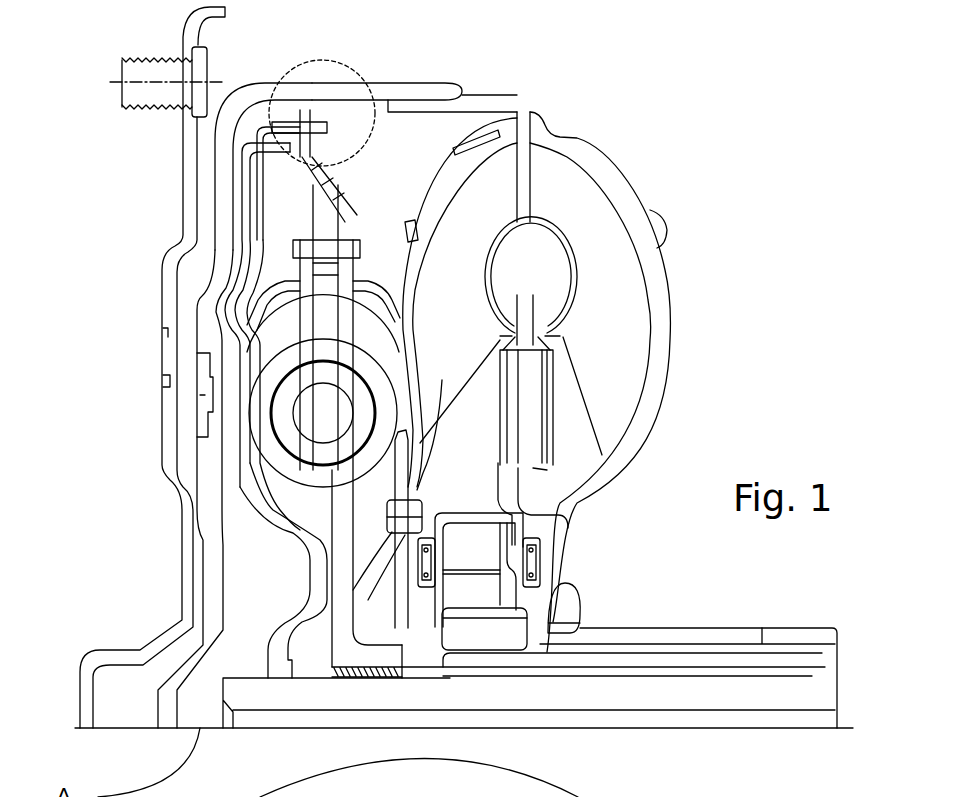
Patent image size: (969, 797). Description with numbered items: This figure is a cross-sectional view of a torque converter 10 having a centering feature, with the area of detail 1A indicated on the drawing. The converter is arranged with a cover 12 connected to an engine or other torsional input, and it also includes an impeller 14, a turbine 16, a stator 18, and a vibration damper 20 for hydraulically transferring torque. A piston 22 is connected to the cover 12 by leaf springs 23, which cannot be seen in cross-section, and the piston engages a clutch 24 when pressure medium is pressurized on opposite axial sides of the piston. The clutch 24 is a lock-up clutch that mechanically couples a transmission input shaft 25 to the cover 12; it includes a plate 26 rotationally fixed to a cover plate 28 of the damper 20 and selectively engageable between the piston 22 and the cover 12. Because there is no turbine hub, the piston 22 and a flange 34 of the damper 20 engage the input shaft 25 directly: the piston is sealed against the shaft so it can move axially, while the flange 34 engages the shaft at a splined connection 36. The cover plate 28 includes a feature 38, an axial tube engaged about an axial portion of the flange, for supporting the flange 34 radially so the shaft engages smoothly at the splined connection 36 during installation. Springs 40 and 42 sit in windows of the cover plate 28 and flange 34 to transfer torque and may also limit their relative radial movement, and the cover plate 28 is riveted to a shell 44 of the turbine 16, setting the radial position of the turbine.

The detail region 1A is at (310, 62).
The torque converter 10 is at (703, 118).
The cover 12 is at (257, 93).
The impeller 14 is at (583, 203).
The turbine 16 is at (493, 180).
The stator 18 is at (530, 413).
The vibration damper 20 is at (388, 198).
The piston 22 is at (282, 523).
The leaf springs 23 is at (203, 428).
The clutch 24 is at (227, 198).
The transmission input shaft 25 is at (675, 688).
The plate 26 is at (228, 147).
The cover plate 28 is at (340, 187).
The flange 34 is at (340, 590).
The splined connection 36 is at (397, 690).
The feature 38 is at (420, 612).
The spring 40 is at (255, 362).
The spring 42 is at (200, 437).
The shell 44 is at (413, 307).